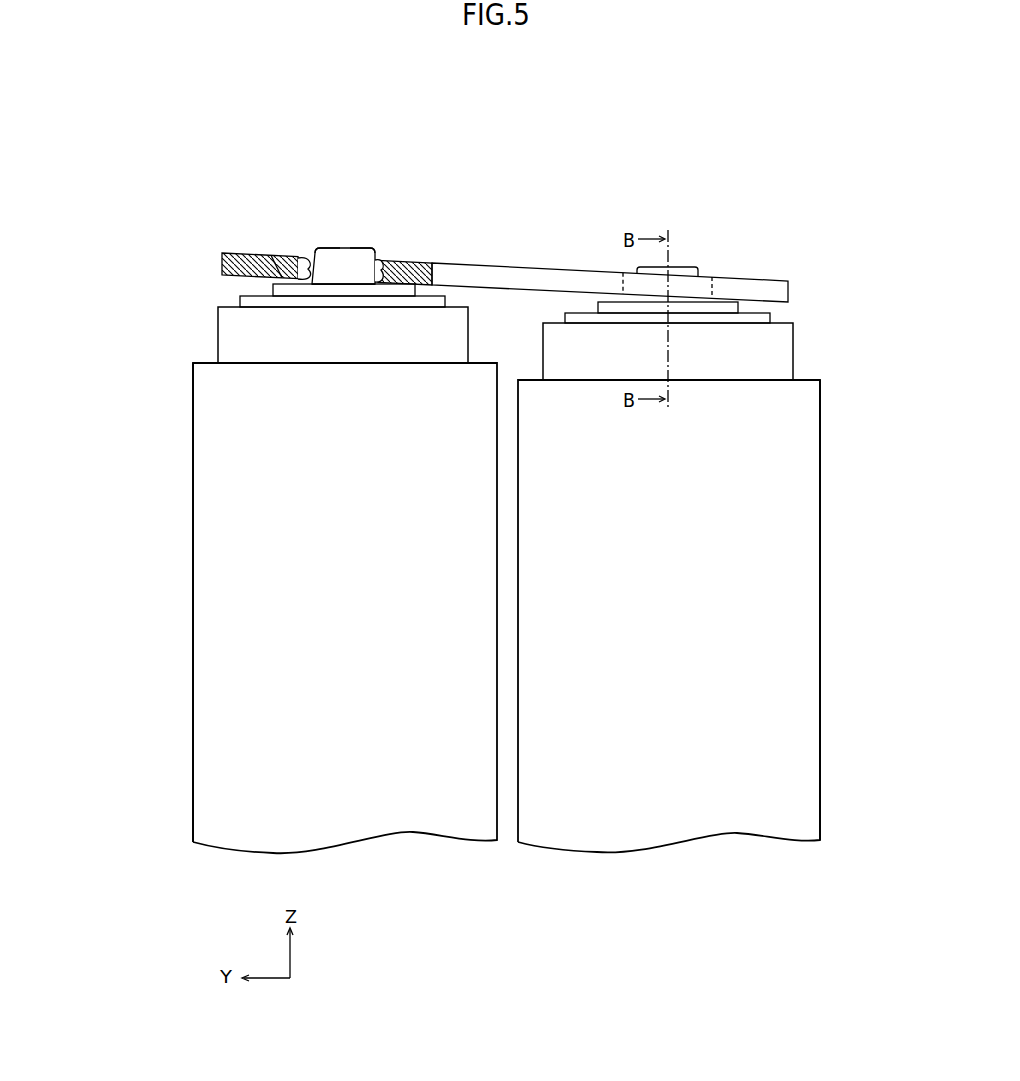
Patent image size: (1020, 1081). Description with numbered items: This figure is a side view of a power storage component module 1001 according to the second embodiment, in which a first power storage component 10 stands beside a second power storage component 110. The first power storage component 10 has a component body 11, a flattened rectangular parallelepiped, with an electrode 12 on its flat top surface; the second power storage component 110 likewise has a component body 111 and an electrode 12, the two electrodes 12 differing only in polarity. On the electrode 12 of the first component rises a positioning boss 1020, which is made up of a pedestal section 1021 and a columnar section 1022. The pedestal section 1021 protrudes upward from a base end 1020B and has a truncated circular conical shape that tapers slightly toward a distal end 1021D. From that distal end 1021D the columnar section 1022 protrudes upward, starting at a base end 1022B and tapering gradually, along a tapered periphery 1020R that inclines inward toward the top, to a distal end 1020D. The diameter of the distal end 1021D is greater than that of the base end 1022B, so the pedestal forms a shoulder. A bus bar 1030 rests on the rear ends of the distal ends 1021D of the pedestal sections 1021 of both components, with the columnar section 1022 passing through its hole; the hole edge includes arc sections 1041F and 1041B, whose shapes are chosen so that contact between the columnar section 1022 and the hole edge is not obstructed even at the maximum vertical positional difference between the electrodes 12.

The first power storage component 10 is at (193, 510).
The component body 11 is at (223, 470).
The electrode 12 is at (445, 298).
The second power storage component 110 is at (819, 536).
The component body 111 is at (797, 493).
The power storage component module 1001 is at (639, 126).
The positioning boss 1020 is at (340, 248).
The base end 1020B is at (330, 285).
The distal end 1020D is at (330, 248).
The tapered periphery 1020R is at (377, 251).
The pedestal section 1021 is at (273, 288).
The distal end of the pedestal section 1021D is at (273, 260).
The columnar section 1022 is at (361, 273).
The base end of the columnar section 1022B is at (353, 286).
The bus bar 1030 is at (518, 265).
The arc section 1041F is at (303, 260).
The arc section 1041B is at (383, 265).